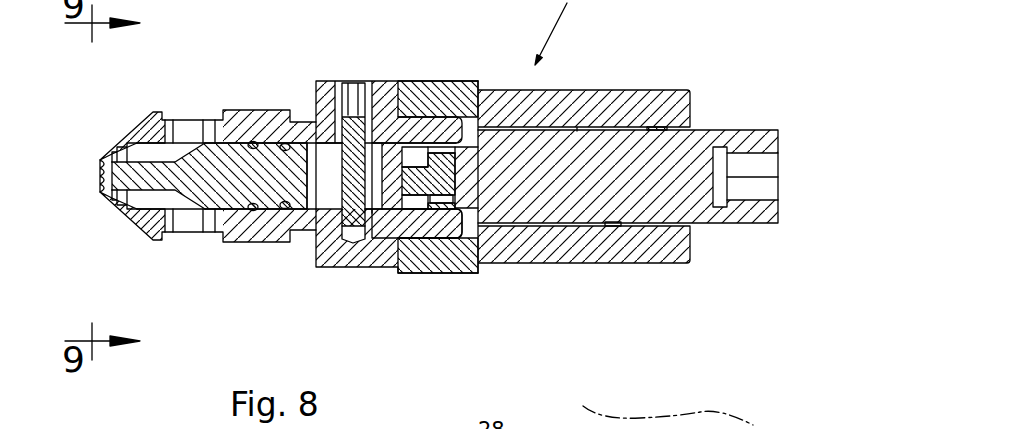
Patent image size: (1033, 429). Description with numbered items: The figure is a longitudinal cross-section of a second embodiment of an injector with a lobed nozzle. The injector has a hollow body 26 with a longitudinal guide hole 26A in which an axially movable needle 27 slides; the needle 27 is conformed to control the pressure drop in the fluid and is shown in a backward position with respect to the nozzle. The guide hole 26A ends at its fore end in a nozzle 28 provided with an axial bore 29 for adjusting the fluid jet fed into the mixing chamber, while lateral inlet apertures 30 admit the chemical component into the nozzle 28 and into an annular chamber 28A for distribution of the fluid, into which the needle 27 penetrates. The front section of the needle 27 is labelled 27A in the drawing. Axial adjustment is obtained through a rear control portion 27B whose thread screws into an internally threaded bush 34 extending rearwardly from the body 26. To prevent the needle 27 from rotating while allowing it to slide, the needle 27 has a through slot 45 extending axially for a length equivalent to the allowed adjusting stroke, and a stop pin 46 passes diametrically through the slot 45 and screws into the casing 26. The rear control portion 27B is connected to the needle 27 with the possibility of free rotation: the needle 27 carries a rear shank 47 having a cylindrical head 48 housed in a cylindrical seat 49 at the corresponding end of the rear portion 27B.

The hollow body 26 is at (383, 90).
The longitudinal guide hole 26A is at (265, 133).
The needle 27 is at (246, 184).
The core front section 27A is at (173, 166).
The rear control portion 27B is at (690, 157).
The nozzle 28 is at (142, 122).
The annular chamber 28A is at (148, 224).
The axial bore 29 is at (100, 175).
The inlet apertures 30 is at (197, 128).
The internally threaded bush 34 is at (632, 103).
The through slot 45 is at (316, 240).
The stop pin 46 is at (353, 212).
The rear shank 47 is at (410, 172).
The cylindrical head 48 is at (438, 180).
The cylindrical seat 49 is at (446, 198).